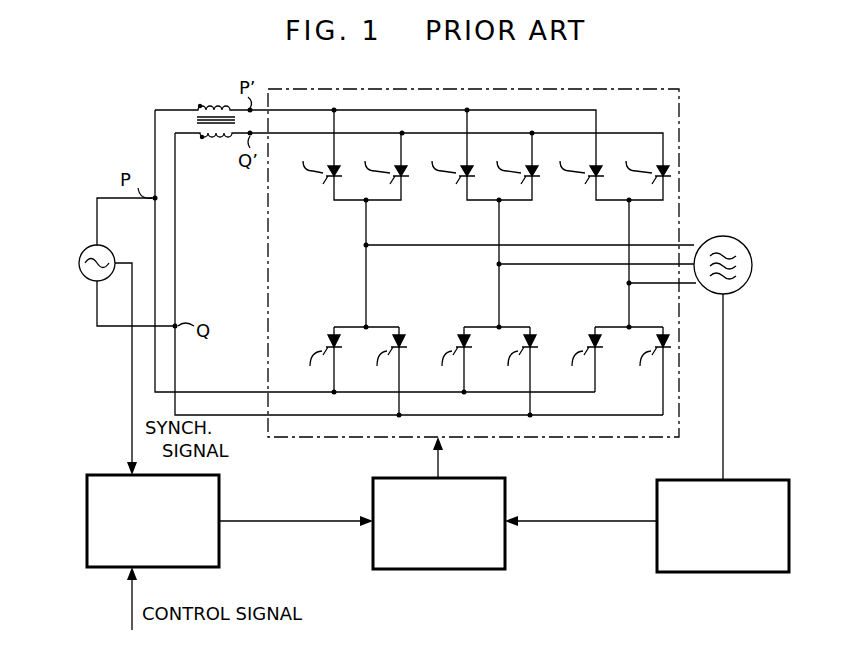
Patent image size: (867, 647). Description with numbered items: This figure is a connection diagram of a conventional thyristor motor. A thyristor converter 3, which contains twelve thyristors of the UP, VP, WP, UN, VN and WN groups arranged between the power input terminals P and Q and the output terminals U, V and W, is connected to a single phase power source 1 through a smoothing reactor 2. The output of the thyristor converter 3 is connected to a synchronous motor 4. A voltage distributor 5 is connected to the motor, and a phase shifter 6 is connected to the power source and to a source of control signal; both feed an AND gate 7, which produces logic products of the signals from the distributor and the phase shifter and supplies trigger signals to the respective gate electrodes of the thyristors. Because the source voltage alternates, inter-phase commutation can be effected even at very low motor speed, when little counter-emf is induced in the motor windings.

The single phase power source 1 is at (111, 229).
The smoothing reactor 2 is at (214, 98).
The thyristor converter 3 is at (416, 72).
The synchronous motor 4 is at (746, 239).
The voltage distributor 5 is at (739, 466).
The phase shifter 6 is at (112, 474).
The AND gate 7 is at (453, 478).